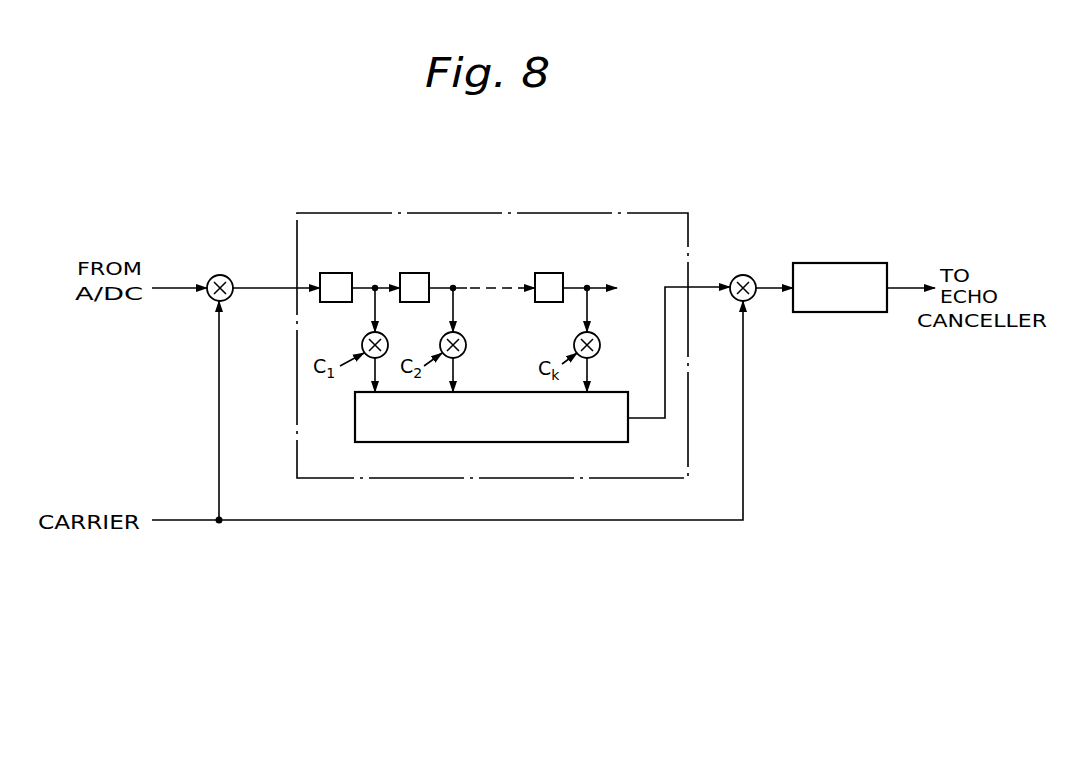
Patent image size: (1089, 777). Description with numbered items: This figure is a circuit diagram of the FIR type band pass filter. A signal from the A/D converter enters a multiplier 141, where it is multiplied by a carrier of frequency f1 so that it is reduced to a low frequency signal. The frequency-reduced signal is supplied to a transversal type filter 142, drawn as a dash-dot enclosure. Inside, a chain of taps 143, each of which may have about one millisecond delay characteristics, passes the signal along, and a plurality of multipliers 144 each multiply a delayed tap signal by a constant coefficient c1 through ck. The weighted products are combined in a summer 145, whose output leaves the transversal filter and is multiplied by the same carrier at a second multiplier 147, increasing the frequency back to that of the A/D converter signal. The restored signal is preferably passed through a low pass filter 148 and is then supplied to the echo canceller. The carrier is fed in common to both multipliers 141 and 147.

The multiplier 141 is at (219, 275).
The transversal type filter 142 is at (648, 212).
The taps 143 is at (341, 273).
The multipliers 144 is at (384, 336).
The summer 145 is at (621, 391).
The multiplier 147 is at (742, 275).
The low pass filter 148 is at (862, 263).